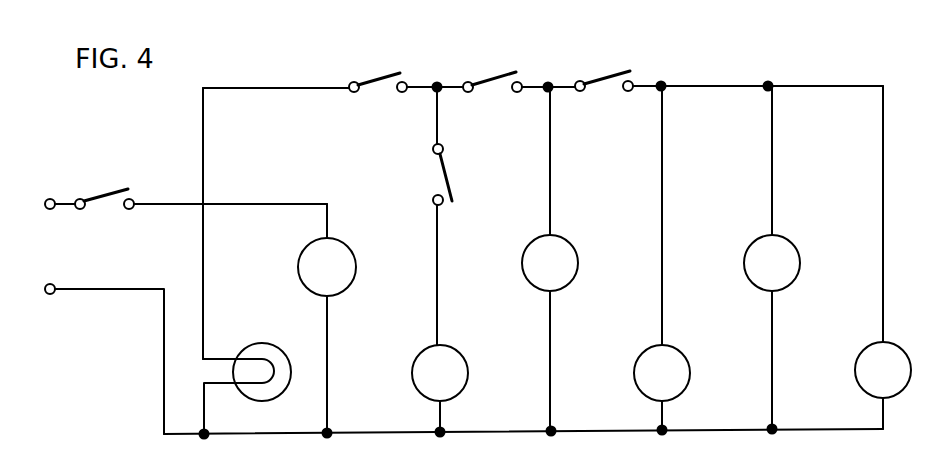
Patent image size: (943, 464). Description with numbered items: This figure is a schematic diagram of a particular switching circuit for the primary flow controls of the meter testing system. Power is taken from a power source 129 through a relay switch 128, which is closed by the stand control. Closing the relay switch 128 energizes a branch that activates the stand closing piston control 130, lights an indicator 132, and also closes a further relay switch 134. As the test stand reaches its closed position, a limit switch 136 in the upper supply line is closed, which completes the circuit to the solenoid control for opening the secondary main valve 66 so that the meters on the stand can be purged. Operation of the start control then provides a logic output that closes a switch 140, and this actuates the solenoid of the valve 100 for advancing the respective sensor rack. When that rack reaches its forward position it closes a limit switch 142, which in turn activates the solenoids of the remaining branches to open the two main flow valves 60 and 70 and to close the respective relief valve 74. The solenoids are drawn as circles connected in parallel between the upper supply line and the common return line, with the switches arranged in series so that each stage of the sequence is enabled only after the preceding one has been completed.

The power source 129 is at (49, 199).
The relay switch 128 is at (108, 193).
The limit switch 136 is at (380, 78).
The switch 140 is at (497, 77).
The limit switch 142 is at (607, 76).
The relay switch 134 is at (446, 173).
The stand closing piston control 130 is at (355, 262).
The indicator 132 is at (287, 330).
The secondary main valve 66 is at (412, 363).
The valve 100 is at (578, 258).
The main flow valve 60 is at (690, 363).
The main flow valve 70 is at (800, 258).
The relief valve 74 is at (856, 365).